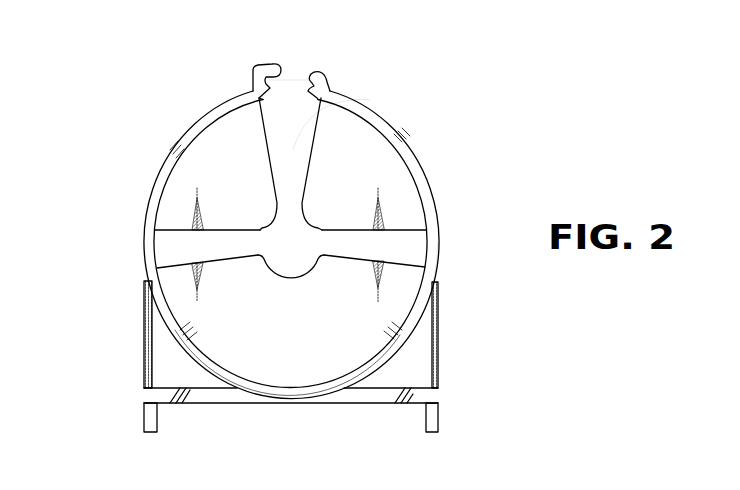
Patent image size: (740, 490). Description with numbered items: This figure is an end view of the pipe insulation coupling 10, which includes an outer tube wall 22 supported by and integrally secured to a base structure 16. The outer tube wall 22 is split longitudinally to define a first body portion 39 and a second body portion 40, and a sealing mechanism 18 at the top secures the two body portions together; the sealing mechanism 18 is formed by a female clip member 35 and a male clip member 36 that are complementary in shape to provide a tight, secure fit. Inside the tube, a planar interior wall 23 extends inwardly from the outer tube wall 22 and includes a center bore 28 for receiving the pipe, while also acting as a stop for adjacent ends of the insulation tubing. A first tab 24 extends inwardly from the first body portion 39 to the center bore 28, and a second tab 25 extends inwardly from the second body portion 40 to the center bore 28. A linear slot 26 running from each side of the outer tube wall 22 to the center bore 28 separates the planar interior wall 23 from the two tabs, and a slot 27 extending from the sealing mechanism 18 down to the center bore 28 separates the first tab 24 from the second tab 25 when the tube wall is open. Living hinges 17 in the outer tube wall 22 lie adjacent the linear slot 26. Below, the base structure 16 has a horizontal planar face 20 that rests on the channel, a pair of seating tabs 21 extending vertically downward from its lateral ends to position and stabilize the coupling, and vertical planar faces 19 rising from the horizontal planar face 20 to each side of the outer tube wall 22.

The pipe insulation coupling 10 is at (90, 205).
The base structure 16 is at (315, 383).
The living hinges 17 is at (290, 265).
The sealing mechanism 18 is at (722, 488).
The vertical planar faces 19 is at (422, 357).
The horizontal planar face 20 is at (353, 397).
The seating tabs 21 is at (150, 422).
The outer tube wall 22 is at (423, 178).
The planar interior wall 23 is at (385, 312).
The first tab 24 is at (208, 163).
The second tab 25 is at (377, 157).
The linear slot 26 is at (413, 250).
The slot 27 is at (293, 150).
The center bore 28 is at (291, 253).
The female clip member 35 is at (263, 60).
The male clip member 36 is at (322, 62).
The first body portion 39 is at (240, 96).
The second body portion 40 is at (333, 94).